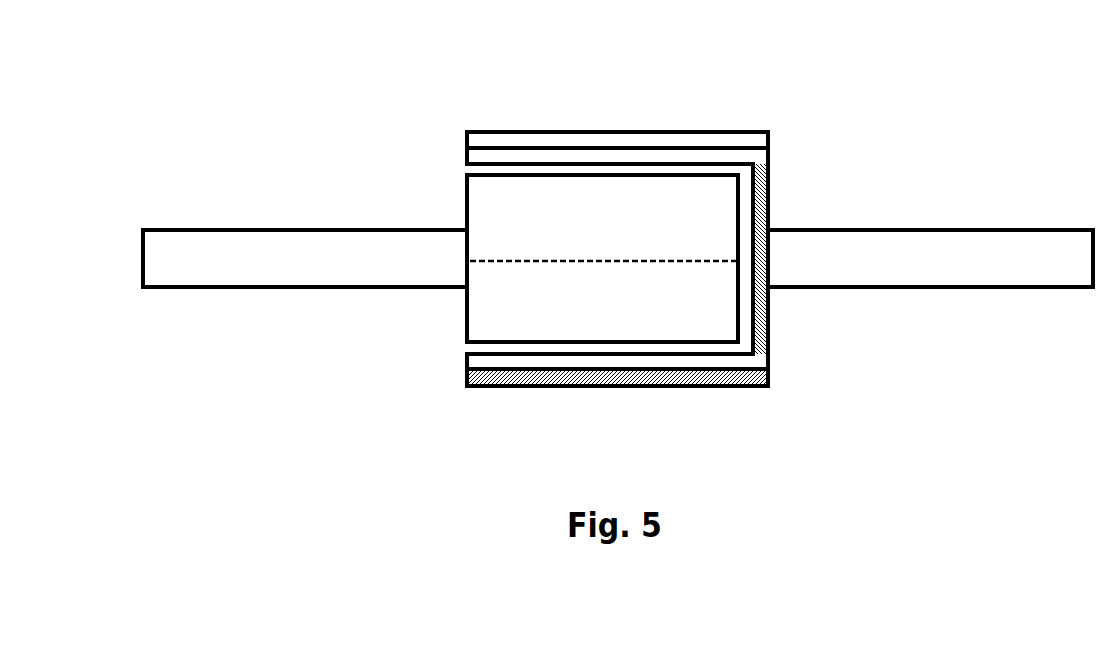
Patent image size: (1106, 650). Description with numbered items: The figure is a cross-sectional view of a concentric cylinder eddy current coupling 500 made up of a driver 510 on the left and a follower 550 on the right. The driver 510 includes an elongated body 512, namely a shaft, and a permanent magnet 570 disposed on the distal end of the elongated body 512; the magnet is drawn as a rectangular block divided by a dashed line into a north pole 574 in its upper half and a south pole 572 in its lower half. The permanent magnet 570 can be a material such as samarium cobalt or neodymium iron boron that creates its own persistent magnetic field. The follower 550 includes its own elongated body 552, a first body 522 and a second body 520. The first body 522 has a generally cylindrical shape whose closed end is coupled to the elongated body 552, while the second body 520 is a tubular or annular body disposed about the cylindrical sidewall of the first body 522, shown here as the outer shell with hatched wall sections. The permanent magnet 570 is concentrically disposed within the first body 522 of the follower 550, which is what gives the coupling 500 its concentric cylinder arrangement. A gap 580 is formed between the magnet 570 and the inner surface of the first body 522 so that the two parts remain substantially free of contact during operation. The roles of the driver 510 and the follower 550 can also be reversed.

The concentric cylinder eddy current coupling 500 is at (203, 70).
The driver 510 is at (283, 218).
The elongated body 512 is at (202, 274).
The second body 520 is at (505, 140).
The first body 522 is at (565, 158).
The follower 550 is at (922, 215).
The elongated body 552 is at (1073, 272).
The permanent magnet 570 is at (466, 205).
The south pole 572 is at (615, 314).
The north pole 574 is at (615, 231).
The gap 580 is at (465, 347).